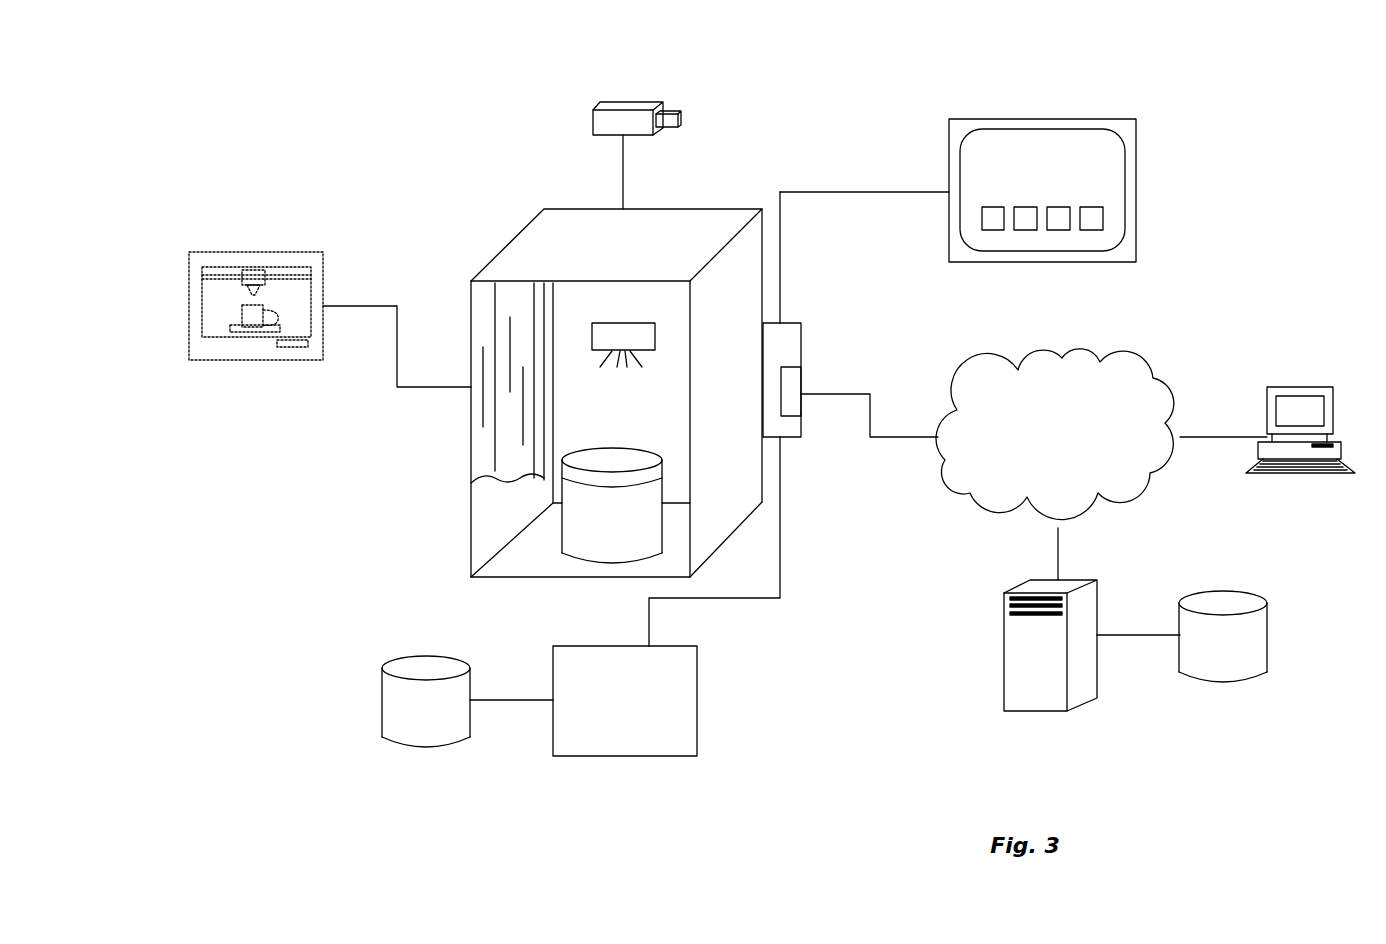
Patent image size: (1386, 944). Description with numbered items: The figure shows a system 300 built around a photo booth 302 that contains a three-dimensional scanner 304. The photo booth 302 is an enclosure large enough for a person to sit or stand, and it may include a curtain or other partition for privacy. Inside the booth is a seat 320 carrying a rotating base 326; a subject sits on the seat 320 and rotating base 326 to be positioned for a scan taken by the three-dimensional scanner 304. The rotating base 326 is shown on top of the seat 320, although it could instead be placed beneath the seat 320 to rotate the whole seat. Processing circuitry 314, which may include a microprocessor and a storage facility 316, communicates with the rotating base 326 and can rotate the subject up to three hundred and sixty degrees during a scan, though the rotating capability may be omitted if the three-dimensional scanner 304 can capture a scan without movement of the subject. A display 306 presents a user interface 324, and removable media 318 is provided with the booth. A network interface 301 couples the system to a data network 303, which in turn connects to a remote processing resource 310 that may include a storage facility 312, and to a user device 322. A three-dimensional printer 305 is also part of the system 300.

The system 300 is at (284, 128).
The network interface 301 is at (801, 400).
The photo booth 302 is at (523, 250).
The data network 303 is at (1067, 343).
The three-dimensional scanner 304 is at (645, 320).
The three-dimensional printer 305 is at (190, 293).
The display 306 is at (1092, 155).
The remote processing resource 310 is at (1058, 711).
The storage facility 312 is at (1225, 680).
The processing circuitry 314 is at (642, 756).
The storage facility 316 is at (425, 737).
The removable media 318 is at (687, 116).
The seat 320 is at (590, 540).
The user device 322 is at (1308, 387).
The user interface 324 is at (1058, 143).
The rotating base 326 is at (614, 446).